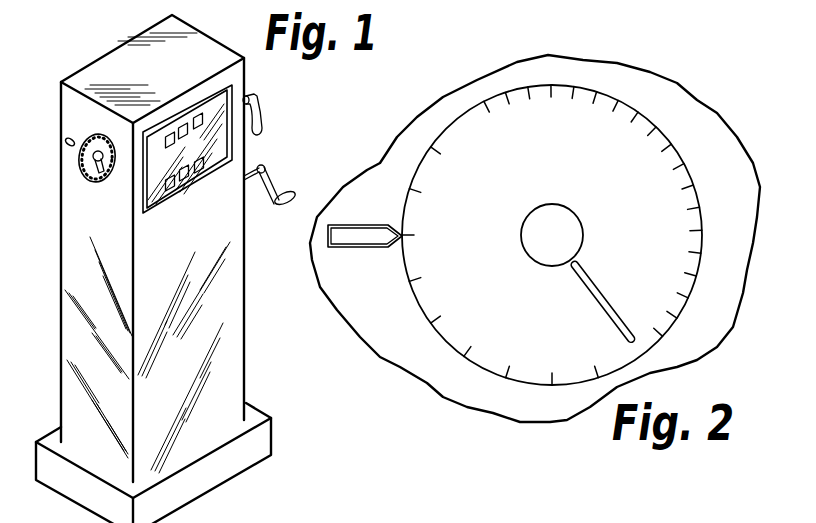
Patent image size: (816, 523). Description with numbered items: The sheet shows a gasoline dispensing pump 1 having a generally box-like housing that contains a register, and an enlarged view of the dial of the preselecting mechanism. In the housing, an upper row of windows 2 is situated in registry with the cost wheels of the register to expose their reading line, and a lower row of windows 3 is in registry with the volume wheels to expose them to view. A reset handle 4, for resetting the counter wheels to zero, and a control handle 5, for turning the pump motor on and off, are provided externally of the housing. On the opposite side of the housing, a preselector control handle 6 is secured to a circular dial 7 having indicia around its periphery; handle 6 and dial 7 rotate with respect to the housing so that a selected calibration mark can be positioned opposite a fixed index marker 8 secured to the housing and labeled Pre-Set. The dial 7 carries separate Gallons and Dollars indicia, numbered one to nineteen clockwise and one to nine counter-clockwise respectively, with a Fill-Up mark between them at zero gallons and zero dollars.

In FIG. 1, the gasoline dispensing pump 1 is at (245, 315).
In FIG. 2, the gasoline dispensing pump 1 is at (447, 384).
In FIG. 1, the upper row of windows 2 is at (197, 115).
In FIG. 1, the lower row of windows 3 is at (200, 171).
In FIG. 2, the lower row of windows 3 is at (403, 236).
In FIG. 1, the reset handle 4 is at (270, 180).
In FIG. 1, the control handle 5 is at (262, 120).
In FIG. 1, the preselector control handle 6 is at (100, 177).
In FIG. 2, the preselector control handle 6 is at (607, 300).
In FIG. 1, the circular dial 7 is at (99, 141).
In FIG. 2, the circular dial 7 is at (700, 190).
In FIG. 1, the fixed index marker 8 is at (66, 146).
In FIG. 2, the fixed index marker 8 is at (345, 248).